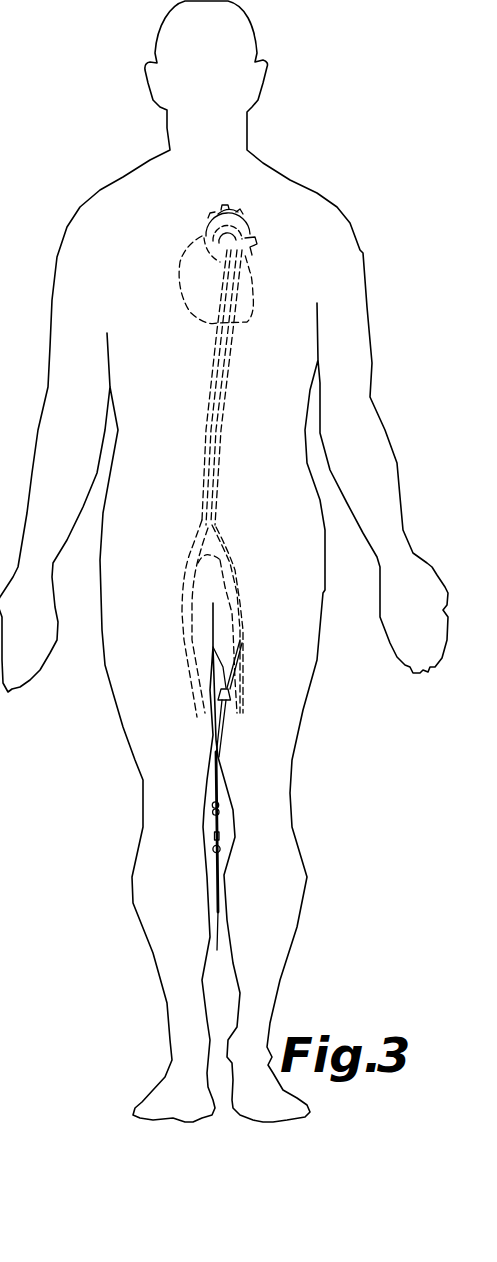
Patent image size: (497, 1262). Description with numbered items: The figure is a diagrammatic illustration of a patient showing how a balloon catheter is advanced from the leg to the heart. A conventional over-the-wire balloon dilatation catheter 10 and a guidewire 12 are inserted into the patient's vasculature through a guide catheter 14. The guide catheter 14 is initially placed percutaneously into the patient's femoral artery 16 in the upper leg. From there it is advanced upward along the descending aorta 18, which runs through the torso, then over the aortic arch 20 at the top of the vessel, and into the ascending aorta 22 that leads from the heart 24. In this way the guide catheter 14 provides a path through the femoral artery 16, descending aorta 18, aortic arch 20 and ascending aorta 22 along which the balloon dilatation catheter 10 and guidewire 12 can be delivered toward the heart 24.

The over-the-wire balloon dilatation catheter 10 is at (219, 739).
The guidewire 12 is at (219, 870).
The guide catheter 14 is at (230, 678).
The femoral artery 16 is at (242, 582).
The descending aorta 18 is at (221, 437).
The aortic arch 20 is at (244, 216).
The ascending aorta 22 is at (200, 233).
The heart 24 is at (187, 293).